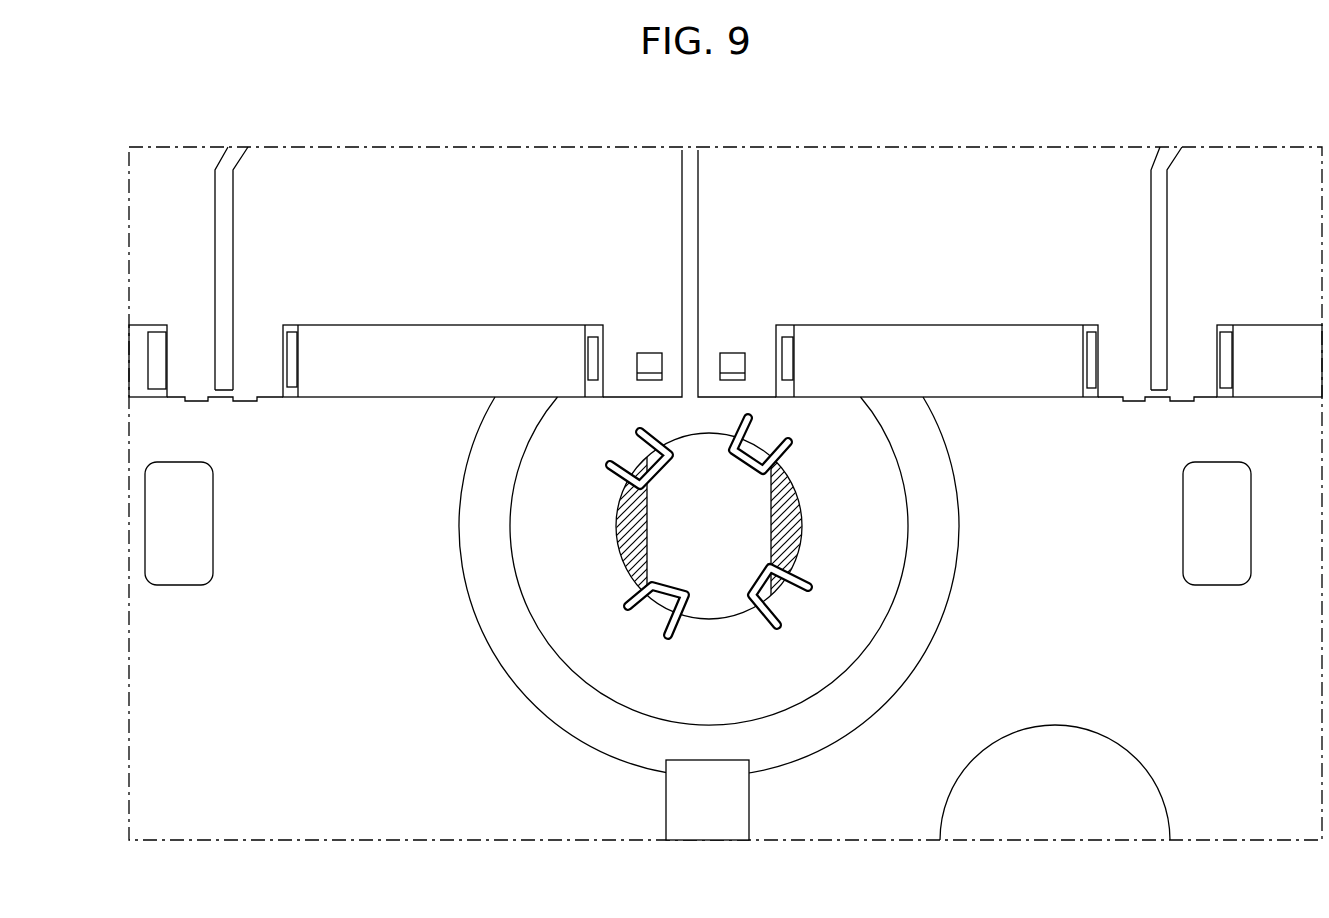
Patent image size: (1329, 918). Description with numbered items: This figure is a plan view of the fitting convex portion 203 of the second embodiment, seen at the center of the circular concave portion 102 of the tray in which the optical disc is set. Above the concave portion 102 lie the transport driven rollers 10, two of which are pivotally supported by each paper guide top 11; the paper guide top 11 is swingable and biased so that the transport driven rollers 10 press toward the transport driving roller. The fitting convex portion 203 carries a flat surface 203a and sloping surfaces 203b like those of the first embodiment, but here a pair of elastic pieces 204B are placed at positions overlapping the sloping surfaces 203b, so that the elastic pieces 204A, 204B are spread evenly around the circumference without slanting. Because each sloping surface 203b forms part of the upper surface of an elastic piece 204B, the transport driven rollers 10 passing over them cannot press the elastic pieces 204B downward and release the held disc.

The concave portion 102 is at (298, 626).
The paper guide top 11 is at (444, 195).
The transport driven roller 10 is at (432, 350).
The fitting convex portion 203 is at (743, 617).
The flat surface 203a is at (720, 588).
The sloping surface 203b is at (616, 530).
The elastic piece 204A is at (798, 438).
The elastic piece 204B is at (638, 452).